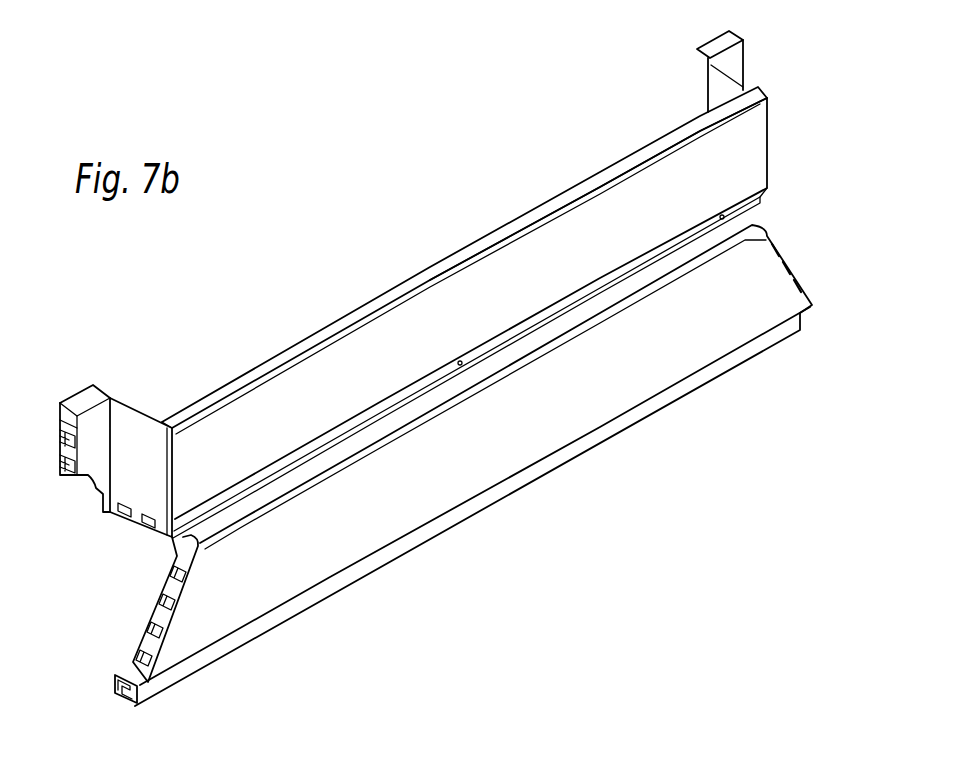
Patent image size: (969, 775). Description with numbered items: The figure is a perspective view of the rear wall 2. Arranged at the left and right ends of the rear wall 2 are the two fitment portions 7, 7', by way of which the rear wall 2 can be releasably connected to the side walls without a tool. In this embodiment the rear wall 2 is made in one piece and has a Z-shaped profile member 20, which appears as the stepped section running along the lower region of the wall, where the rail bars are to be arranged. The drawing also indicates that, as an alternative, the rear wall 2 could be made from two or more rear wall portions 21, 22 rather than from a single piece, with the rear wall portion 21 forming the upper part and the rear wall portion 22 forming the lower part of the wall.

The rear wall 2 is at (425, 305).
The rear wall portion 21 is at (565, 232).
The rear wall portion 22 is at (588, 395).
The fitment portion 7 is at (116, 429).
The fitment portion 7' is at (772, 56).
The Z-shaped profile member 20 is at (163, 551).